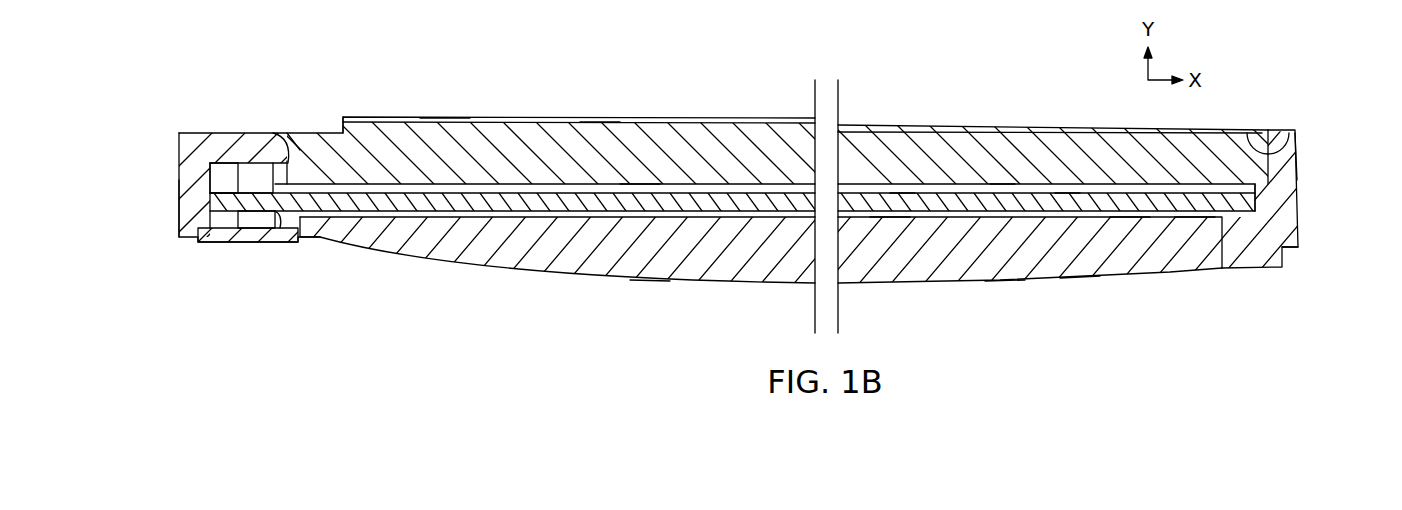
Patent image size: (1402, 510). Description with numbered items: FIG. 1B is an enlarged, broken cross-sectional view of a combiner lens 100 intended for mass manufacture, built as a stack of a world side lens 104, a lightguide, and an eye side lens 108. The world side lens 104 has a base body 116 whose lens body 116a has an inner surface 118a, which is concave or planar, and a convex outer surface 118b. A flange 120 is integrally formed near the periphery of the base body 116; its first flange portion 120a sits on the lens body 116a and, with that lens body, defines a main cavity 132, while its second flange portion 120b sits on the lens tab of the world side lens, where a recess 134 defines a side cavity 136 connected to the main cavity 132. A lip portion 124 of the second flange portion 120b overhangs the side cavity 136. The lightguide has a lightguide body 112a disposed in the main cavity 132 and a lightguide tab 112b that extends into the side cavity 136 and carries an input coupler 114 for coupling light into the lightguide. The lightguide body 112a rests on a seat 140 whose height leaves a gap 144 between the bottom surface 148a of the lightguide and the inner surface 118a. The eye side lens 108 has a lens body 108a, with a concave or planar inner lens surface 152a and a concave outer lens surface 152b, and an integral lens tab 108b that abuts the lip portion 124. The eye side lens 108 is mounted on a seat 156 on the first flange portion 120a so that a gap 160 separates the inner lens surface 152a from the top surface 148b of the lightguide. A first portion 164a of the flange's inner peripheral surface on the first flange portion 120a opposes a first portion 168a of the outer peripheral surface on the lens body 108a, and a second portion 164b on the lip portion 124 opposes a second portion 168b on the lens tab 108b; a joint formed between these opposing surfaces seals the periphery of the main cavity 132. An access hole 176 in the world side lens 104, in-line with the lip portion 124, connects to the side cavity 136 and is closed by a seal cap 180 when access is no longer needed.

The combiner lens 100 is at (963, 72).
The world side lens 104 is at (1077, 278).
The eye side lens 108 is at (748, 117).
The lens body 108a is at (443, 132).
The lens tab 108b is at (328, 133).
The lightguide body 112a is at (537, 202).
The lightguide tab 112b is at (223, 203).
The input coupler 114 is at (260, 208).
The base body 116 is at (568, 272).
The lens body 116a is at (1005, 272).
The inner surface 118a is at (890, 213).
The outer surface 118b is at (650, 278).
The flange 120 is at (1298, 222).
The first flange portion 120a is at (1297, 172).
The second flange portion 120b is at (179, 212).
The lip portion 124 is at (218, 133).
The main cavity 132 is at (1002, 190).
The recess 134 is at (213, 185).
The side cavity 136 is at (220, 177).
The seat 140 is at (1250, 200).
The gap 144 is at (1128, 215).
The bottom surface 148a is at (1188, 213).
The top surface 148b is at (902, 190).
The inner lens surface 152a is at (632, 186).
The outer lens surface 152b is at (597, 120).
The seat 156 is at (1300, 250).
The gap 160 is at (1067, 190).
The first portion of inner peripheral surface 164a is at (1257, 150).
The second portion of inner peripheral surface 164b is at (293, 163).
The first portion of outer peripheral surface 168a is at (1283, 157).
The second portion of outer peripheral surface 168b is at (272, 135).
The access hole 176 is at (277, 217).
The seal cap 180 is at (250, 233).